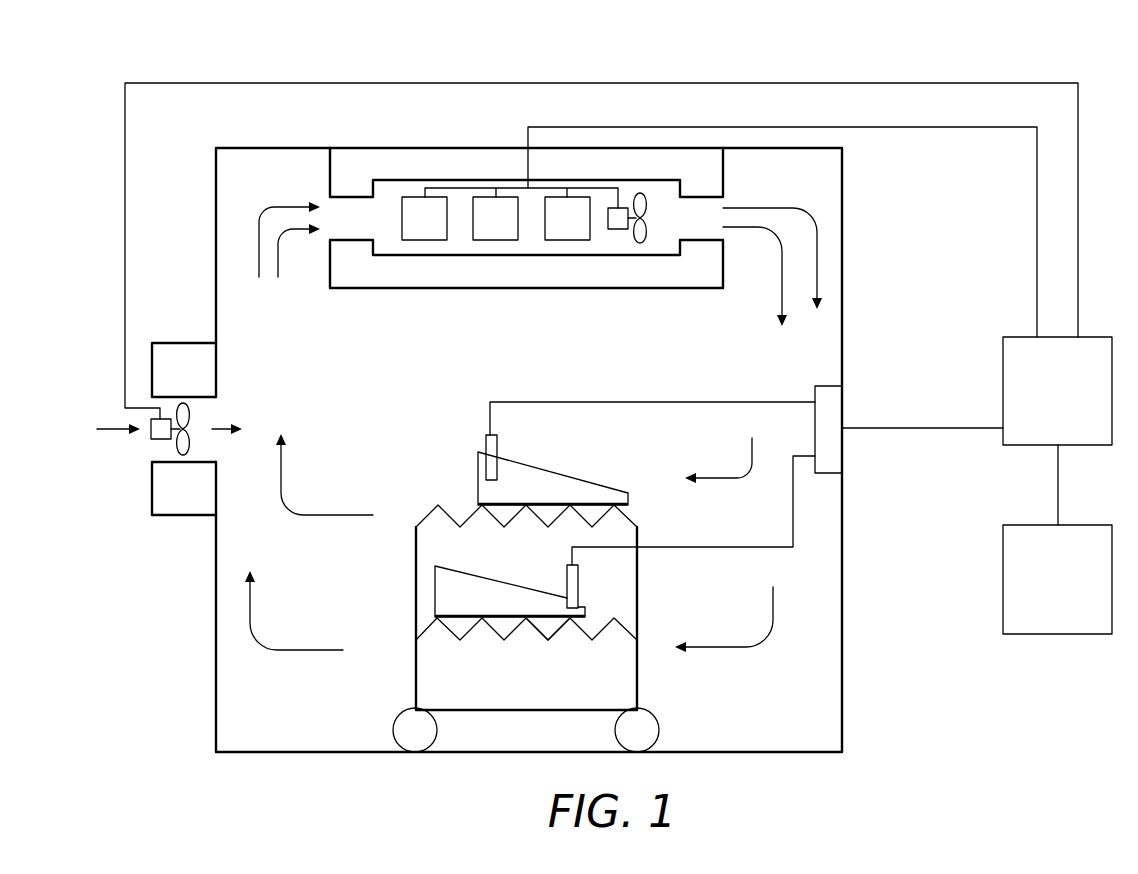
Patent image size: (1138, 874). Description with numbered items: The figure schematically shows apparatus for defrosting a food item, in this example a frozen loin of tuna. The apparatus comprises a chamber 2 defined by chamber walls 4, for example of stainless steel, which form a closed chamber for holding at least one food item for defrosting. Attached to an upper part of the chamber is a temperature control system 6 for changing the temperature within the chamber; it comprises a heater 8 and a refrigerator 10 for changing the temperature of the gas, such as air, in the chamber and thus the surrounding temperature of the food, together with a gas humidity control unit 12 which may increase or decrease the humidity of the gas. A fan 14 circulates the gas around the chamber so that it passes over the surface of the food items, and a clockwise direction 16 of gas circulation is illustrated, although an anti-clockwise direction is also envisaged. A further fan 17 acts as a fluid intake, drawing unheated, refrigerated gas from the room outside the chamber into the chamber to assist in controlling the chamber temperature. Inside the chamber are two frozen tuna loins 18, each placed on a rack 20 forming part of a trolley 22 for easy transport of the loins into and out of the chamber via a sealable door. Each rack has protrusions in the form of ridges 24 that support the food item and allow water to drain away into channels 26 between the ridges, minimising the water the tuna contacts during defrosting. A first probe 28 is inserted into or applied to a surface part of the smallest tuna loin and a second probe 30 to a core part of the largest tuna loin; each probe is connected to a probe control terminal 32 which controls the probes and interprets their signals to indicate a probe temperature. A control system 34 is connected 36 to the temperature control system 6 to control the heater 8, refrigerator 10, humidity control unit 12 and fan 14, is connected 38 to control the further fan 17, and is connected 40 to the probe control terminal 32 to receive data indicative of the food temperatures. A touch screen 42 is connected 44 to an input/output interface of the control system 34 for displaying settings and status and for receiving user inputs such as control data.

The chamber 2 is at (522, 452).
The chamber walls 4 is at (273, 148).
The temperature control system 6 is at (400, 160).
The heater 8 is at (425, 240).
The refrigerator 10 is at (496, 240).
The gas humidity control unit 12 is at (567, 240).
The fan 14 is at (640, 245).
The clockwise direction of gas circulation 16 is at (290, 205).
The further fan 17 is at (190, 447).
The frozen tuna loins 18 is at (557, 480).
The rack 20 is at (508, 590).
The trolley 22 is at (640, 605).
The ridges 24 is at (527, 625).
The channels 26 is at (526, 656).
The first probe 28 is at (580, 572).
The second probe 30 is at (486, 442).
The probe control terminal 32 is at (835, 398).
The control system 34 is at (1057, 391).
The connection to temperature control system 36 is at (953, 127).
The connection to further fan 38 is at (993, 83).
The connection to probe control terminal 40 is at (928, 430).
The touch screen 42 is at (1057, 579).
The connection to touch screen 44 is at (1060, 483).